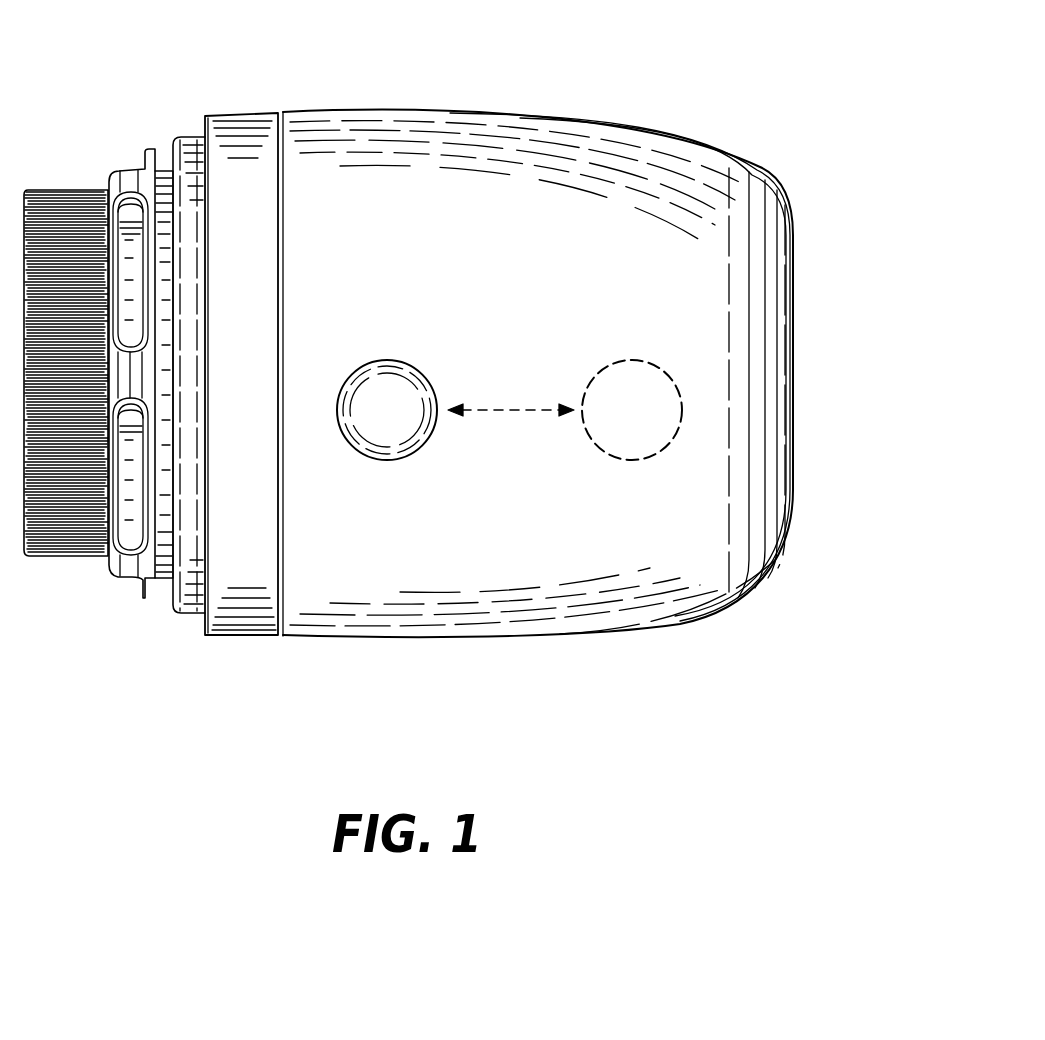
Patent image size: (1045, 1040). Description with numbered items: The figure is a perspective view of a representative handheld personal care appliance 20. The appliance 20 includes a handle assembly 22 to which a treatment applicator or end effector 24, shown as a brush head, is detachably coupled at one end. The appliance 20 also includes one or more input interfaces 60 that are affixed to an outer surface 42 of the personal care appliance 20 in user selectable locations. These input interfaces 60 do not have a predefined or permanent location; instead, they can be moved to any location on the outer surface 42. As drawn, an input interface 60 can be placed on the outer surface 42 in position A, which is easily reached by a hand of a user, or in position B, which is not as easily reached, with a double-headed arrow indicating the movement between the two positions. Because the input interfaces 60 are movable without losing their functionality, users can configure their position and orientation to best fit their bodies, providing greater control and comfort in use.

The personal care appliance 20 is at (687, 115).
The handle assembly 22 is at (793, 488).
The end effector 24 is at (80, 188).
The outer surface 42 is at (710, 588).
The input interface 60 is at (385, 460).